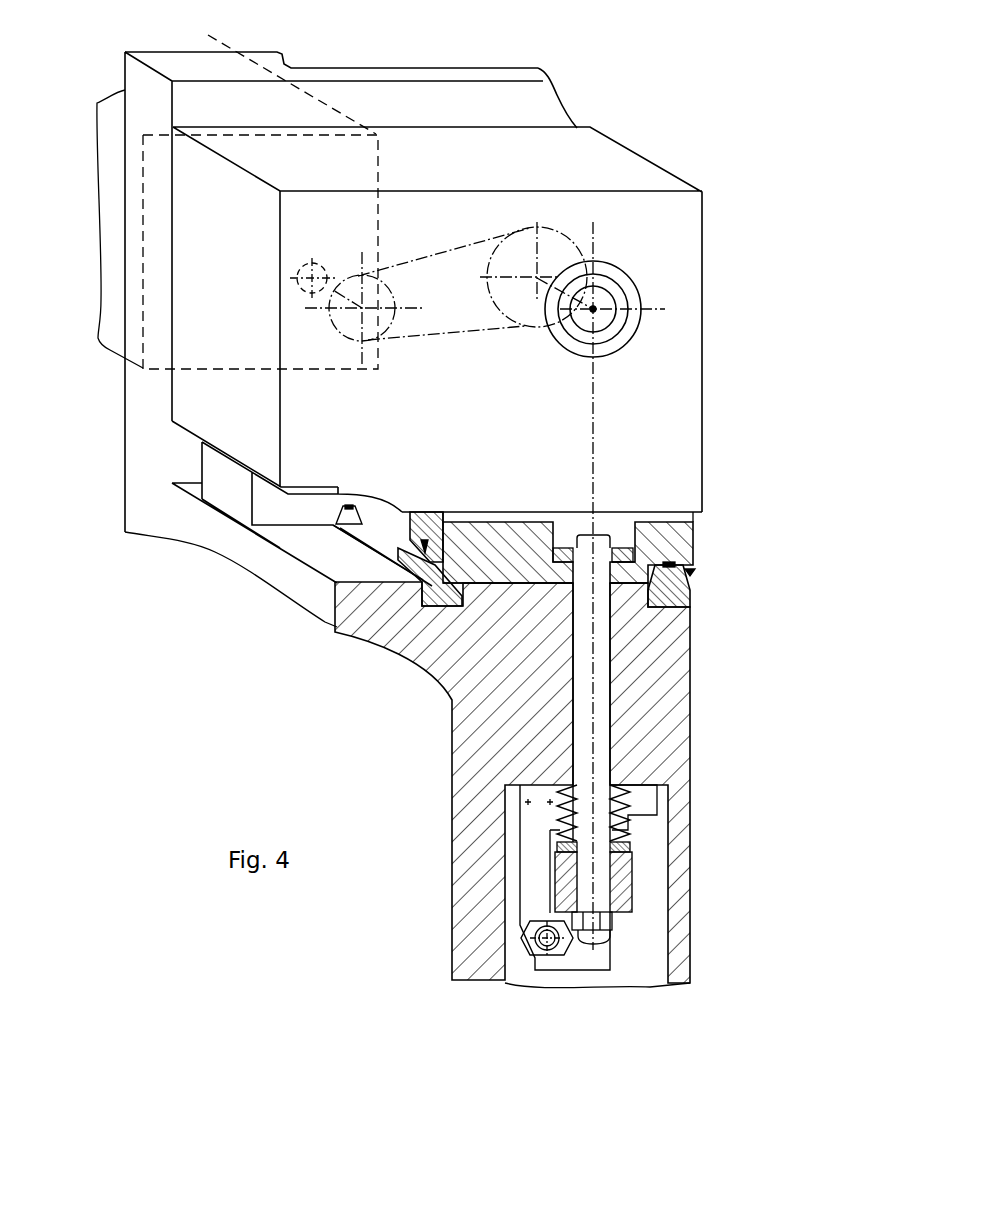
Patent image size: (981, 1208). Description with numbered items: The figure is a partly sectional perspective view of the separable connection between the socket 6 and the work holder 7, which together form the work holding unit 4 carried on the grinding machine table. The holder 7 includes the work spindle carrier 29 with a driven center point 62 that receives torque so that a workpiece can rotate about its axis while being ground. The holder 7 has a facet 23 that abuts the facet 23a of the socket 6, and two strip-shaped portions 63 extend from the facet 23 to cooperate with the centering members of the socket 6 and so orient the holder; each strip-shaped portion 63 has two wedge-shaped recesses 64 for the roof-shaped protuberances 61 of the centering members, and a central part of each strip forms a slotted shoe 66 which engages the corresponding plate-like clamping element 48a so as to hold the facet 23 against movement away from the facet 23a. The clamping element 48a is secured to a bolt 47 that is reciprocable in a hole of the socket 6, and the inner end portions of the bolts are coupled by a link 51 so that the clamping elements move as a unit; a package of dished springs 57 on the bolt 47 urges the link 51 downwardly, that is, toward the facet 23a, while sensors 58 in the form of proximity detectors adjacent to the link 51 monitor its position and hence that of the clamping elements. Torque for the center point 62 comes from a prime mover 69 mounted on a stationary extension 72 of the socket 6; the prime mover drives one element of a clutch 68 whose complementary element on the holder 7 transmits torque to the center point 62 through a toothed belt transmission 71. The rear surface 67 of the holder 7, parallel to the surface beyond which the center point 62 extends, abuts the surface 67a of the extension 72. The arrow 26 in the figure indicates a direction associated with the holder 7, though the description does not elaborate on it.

The work holding unit 4 is at (212, 727).
The socket 6 is at (690, 712).
The work holder 7 is at (702, 127).
The facet of the holder 23 is at (696, 537).
The facet of the socket 23a is at (513, 572).
The guide direction 26 is at (230, 428).
The work spindle carrier 29 is at (687, 398).
The bolt 47 is at (607, 662).
The clamping element 48a is at (635, 561).
The link 51 is at (633, 887).
The dished spring package 57 is at (628, 810).
The sensor 58 is at (541, 964).
The roof-shaped protuberance 61 is at (424, 606).
The center point 62 is at (607, 303).
The strip-shaped portion 63 is at (400, 537).
The wedge-shaped recess 64 is at (420, 535).
The slotted shoe 66 is at (562, 568).
The rear surface of the holder 67 is at (557, 122).
The surface of the socket extension 67a is at (543, 100).
The clutch 68 is at (318, 263).
The prime mover 69 is at (213, 46).
The toothed belt transmission 71 is at (443, 248).
The extension of the socket 72 is at (405, 75).